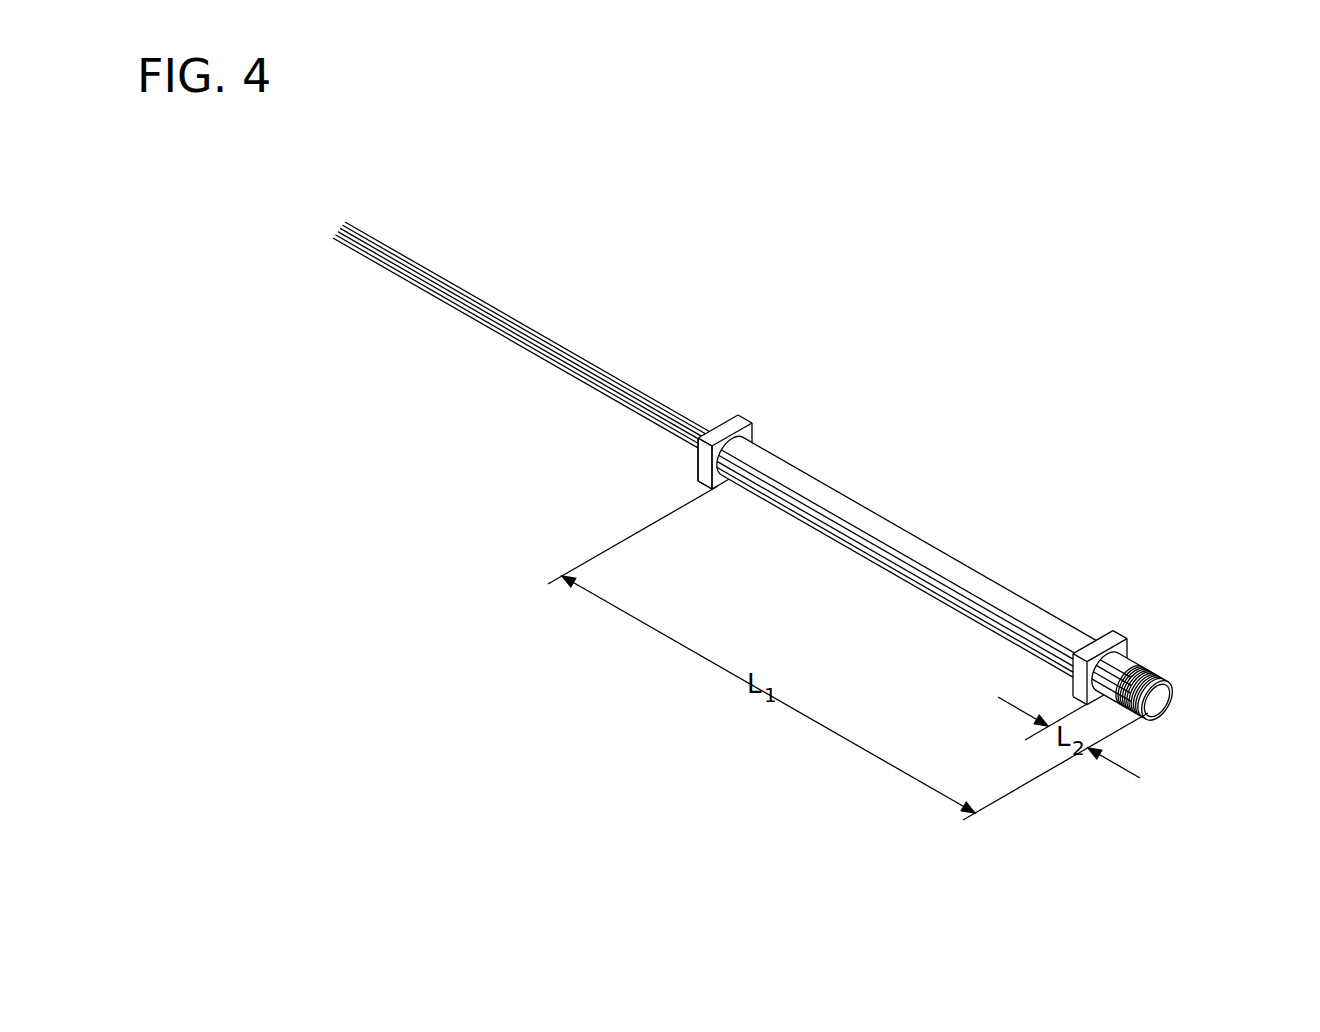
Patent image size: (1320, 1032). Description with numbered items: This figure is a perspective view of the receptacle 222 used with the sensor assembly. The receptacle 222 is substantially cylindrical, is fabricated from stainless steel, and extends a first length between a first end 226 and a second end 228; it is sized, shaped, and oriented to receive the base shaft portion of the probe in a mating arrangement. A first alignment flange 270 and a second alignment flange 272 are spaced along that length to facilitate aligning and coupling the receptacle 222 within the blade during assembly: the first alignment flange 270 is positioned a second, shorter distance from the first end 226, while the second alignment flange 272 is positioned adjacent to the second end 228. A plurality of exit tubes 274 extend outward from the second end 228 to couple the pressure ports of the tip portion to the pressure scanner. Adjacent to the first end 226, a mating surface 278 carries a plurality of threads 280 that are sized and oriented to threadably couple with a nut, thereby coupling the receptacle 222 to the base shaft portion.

The receptacle 222 is at (899, 513).
The first end 226 is at (1176, 686).
The second end 228 is at (728, 421).
The first alignment flange 270 is at (1120, 633).
The second alignment flange 272 is at (696, 463).
The exit tubes 274 is at (461, 273).
The mating surface 278 is at (1169, 662).
The threads 280 is at (1133, 717).